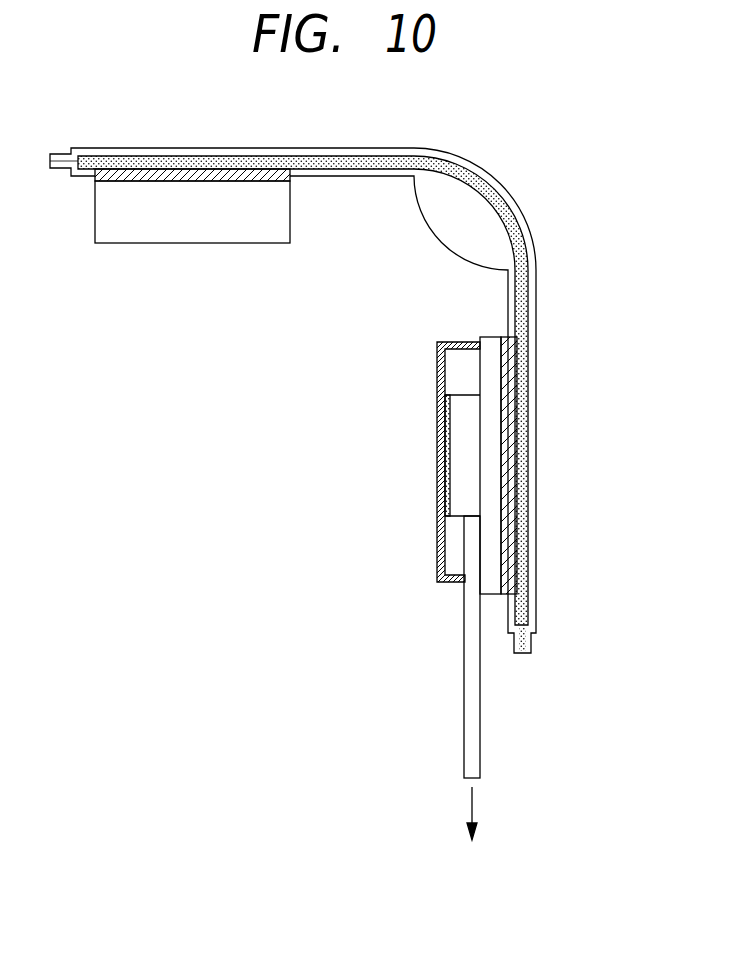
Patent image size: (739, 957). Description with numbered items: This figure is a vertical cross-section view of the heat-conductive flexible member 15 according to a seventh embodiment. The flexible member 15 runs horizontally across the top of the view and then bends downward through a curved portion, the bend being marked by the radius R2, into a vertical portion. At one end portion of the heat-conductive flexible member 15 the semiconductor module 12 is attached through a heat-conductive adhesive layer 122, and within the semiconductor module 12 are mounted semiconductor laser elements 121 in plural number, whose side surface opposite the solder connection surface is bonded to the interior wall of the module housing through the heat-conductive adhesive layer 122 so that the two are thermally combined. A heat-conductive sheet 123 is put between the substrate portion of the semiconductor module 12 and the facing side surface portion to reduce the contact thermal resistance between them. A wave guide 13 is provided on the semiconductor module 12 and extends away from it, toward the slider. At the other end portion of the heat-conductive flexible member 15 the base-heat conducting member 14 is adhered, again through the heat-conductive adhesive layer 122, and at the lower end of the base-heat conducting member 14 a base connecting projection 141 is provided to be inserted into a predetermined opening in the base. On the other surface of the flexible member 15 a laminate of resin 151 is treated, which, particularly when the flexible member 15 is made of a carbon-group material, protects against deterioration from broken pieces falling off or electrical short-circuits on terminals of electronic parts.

The semiconductor module 12 is at (429, 373).
The semiconductor laser element 121 is at (462, 486).
The heat-conductive adhesive layer 122 is at (500, 483).
The heat-conductive sheet 123 is at (512, 380).
The wave guide 13 is at (473, 722).
The base-heat conducting member 14 is at (210, 228).
The base connecting projection 141 is at (127, 181).
The heat-conductive flexible member 15 is at (293, 366).
The laminate of resin 151 is at (148, 147).
The bending radius R2 is at (470, 218).